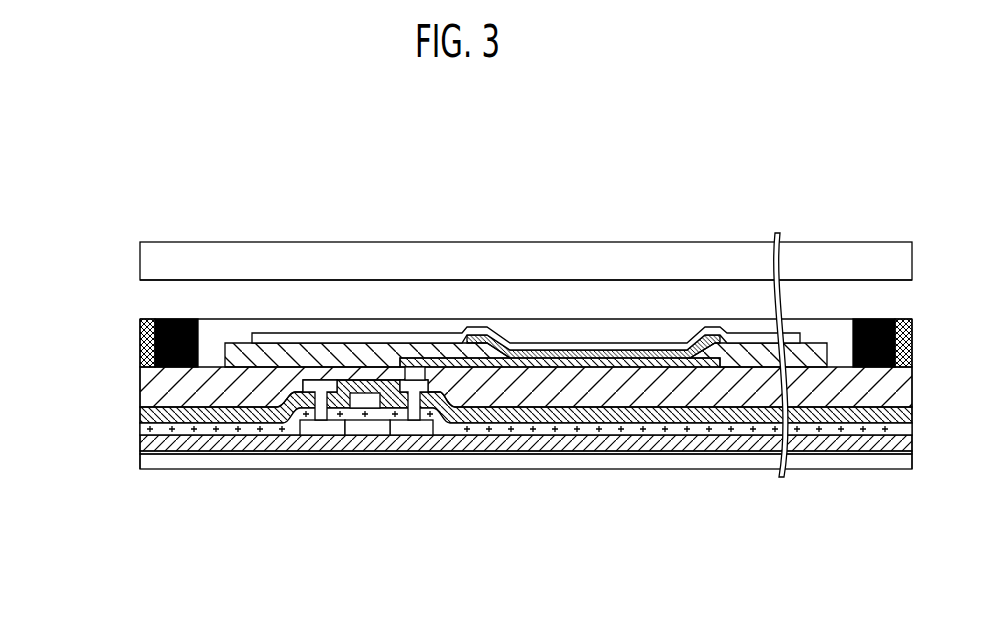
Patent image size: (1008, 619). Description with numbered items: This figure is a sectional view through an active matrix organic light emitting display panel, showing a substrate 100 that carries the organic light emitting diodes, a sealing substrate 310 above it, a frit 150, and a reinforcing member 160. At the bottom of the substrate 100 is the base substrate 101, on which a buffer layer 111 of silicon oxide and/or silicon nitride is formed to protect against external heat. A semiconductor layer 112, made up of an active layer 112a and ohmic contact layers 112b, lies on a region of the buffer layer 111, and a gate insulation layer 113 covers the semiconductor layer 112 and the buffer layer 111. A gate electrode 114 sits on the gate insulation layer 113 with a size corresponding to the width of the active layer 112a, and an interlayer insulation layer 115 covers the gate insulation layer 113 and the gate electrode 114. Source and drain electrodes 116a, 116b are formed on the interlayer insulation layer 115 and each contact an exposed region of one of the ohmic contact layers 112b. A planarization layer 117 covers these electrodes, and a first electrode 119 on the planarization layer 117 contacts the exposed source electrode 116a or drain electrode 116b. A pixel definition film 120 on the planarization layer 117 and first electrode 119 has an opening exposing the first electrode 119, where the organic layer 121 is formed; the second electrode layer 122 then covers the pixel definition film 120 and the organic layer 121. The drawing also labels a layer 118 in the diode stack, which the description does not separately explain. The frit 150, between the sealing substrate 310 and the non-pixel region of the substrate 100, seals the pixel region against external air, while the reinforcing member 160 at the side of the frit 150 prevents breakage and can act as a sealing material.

The substrate 100 is at (467, 377).
The base substrate 101 is at (170, 463).
The buffer layer 111 is at (147, 453).
The semiconductor layer 112 is at (369, 494).
The active layer 112a is at (368, 473).
The ohmic contact layers 112b is at (313, 435).
The gate insulation layer 113 is at (147, 443).
The gate electrode 114 is at (362, 400).
The interlayer insulation layer 115 is at (147, 429).
The source electrode 116a is at (313, 387).
The drain electrode 116b is at (412, 385).
The planarization layer 117 is at (146, 410).
The bank layer 118 is at (466, 343).
The first electrode 119 is at (543, 360).
The pixel definition film 120 is at (147, 375).
The organic layer 121 is at (597, 352).
The second electrode layer 122 is at (653, 347).
The frit 150 is at (181, 318).
The reinforcing member 160 is at (140, 337).
The sealing substrate 310 is at (140, 248).